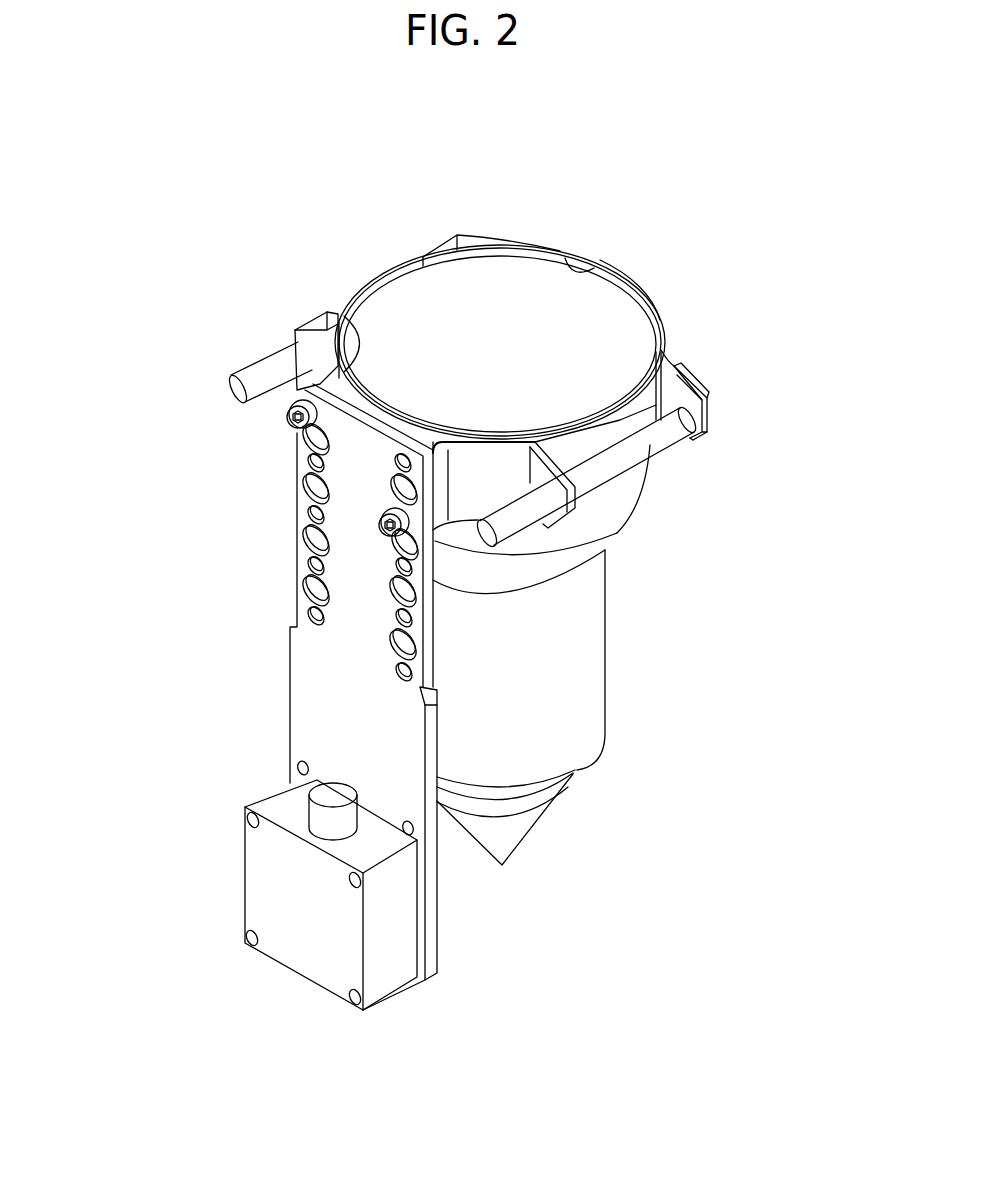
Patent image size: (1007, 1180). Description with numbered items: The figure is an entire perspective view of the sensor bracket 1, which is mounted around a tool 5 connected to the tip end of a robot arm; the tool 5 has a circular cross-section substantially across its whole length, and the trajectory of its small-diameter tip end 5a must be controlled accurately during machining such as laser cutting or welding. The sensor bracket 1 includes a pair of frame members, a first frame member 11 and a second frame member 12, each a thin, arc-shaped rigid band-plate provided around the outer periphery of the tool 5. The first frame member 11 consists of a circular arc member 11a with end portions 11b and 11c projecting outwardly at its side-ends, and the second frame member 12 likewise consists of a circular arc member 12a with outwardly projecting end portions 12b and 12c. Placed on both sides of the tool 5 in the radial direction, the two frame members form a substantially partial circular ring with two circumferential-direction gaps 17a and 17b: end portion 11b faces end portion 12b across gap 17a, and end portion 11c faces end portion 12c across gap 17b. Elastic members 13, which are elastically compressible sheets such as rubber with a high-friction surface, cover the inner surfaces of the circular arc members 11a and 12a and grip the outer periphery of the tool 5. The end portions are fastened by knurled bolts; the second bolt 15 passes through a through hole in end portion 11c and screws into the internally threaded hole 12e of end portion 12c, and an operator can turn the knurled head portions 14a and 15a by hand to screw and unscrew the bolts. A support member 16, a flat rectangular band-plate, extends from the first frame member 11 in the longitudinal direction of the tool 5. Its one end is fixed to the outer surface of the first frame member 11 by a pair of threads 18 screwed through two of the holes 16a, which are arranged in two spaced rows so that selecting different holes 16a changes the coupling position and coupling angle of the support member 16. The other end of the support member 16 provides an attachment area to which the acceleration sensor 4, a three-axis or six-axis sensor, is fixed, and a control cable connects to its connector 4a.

The sensor bracket 1 is at (168, 463).
The acceleration sensor 4 is at (245, 878).
The connector 4a is at (322, 798).
The tool 5 is at (606, 678).
The tip end 5a is at (502, 866).
The first frame member 11 is at (467, 550).
The circular arc member 11a is at (437, 455).
The end portion 11b is at (336, 328).
The end portion 11c is at (553, 455).
The second frame member 12 is at (630, 236).
The circular arc member 12a is at (638, 272).
The end portion 12b is at (455, 252).
The end portion 12c is at (688, 382).
The hole 12e is at (694, 443).
The elastic member 13 is at (573, 259).
The head portion 14a is at (258, 380).
The second bolt 15 is at (617, 462).
The head portion 15a is at (513, 525).
The support member 16 is at (290, 703).
The holes 16a is at (397, 670).
The circumferential-direction gap 17a is at (372, 268).
The circumferential-direction gap 17b is at (646, 403).
The threads 18 is at (290, 415).